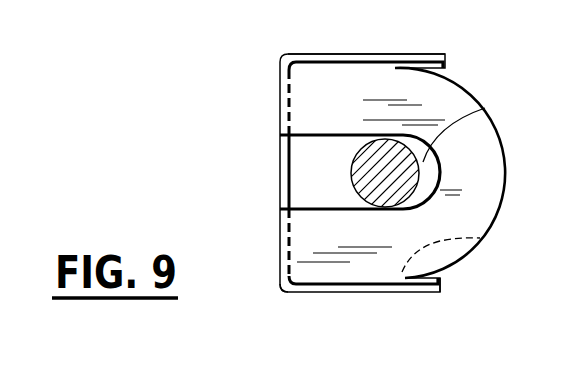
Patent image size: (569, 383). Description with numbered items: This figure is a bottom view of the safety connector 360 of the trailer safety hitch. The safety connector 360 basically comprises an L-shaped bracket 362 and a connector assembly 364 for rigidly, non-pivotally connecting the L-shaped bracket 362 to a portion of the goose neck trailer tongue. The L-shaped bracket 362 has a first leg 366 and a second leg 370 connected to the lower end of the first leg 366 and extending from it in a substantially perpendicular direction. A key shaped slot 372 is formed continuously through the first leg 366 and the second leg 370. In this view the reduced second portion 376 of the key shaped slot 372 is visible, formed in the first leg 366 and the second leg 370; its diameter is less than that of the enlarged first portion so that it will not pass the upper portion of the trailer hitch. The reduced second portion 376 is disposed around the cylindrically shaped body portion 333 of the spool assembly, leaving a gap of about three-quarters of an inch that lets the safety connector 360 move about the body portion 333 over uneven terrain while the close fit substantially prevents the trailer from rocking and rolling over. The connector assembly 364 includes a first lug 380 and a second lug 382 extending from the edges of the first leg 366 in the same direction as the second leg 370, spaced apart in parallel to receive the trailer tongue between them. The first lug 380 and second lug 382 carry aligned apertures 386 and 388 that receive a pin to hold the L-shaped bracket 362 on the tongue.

The safety connector 360 is at (247, 88).
The L-shaped bracket 362 is at (278, 104).
The cylindrically shaped body portion 333 is at (352, 151).
The first leg 366 is at (280, 276).
The second leg 370 is at (481, 172).
The key shaped slot 372 is at (312, 190).
The reduced second portion 376 is at (485, 108).
The first lug 380 is at (444, 57).
The second lug 382 is at (440, 281).
The aperture 386 is at (395, 53).
The aperture 388 is at (470, 238).
The connector assembly 364 is at (441, 296).